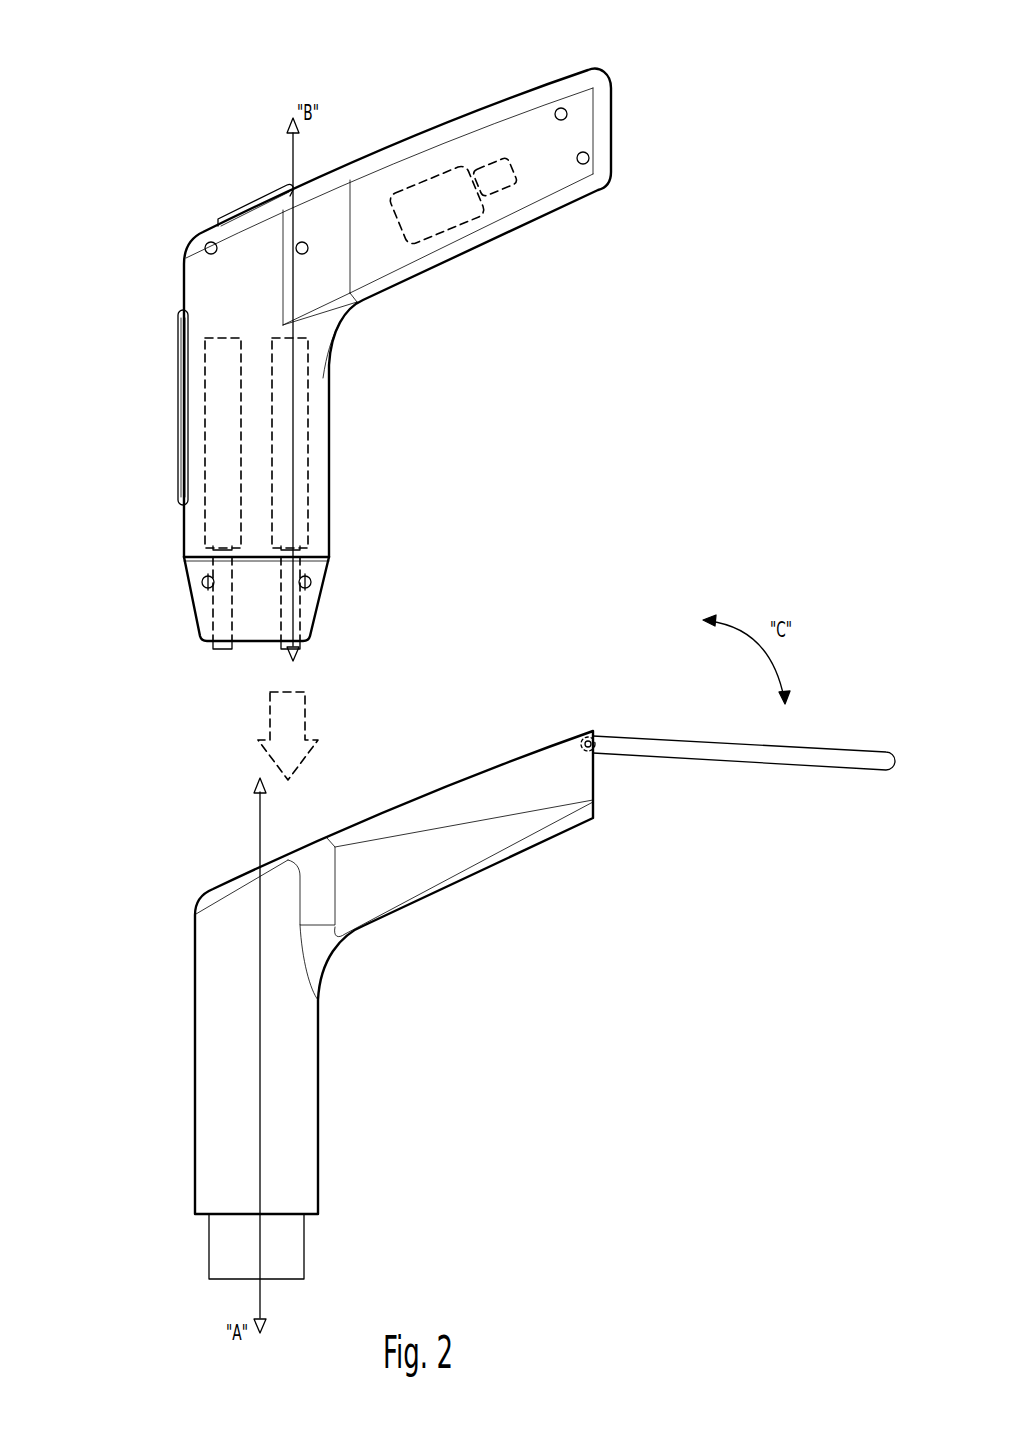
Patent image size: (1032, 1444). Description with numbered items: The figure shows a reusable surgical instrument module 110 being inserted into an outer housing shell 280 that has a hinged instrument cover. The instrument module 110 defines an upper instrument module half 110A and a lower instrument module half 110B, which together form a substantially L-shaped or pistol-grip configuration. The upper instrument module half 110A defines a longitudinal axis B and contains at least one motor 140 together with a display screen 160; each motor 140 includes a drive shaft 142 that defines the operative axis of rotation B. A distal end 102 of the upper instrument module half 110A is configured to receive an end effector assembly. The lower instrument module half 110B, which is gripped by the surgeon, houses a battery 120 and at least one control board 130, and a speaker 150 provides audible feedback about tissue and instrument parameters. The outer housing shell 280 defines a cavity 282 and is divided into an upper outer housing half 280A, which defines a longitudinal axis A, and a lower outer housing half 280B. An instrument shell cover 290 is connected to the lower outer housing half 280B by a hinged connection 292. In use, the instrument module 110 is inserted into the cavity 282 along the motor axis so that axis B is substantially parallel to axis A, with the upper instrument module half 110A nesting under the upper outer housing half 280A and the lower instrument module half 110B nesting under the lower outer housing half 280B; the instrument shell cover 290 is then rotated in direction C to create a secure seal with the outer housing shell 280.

The distal end 102 is at (195, 598).
The instrument module 110 is at (200, 190).
The upper instrument module half 110A is at (182, 538).
The lower instrument module half 110B is at (458, 120).
The battery 120 is at (500, 184).
The control board 130 is at (437, 217).
The motor 140 is at (305, 487).
The drive shaft 142 is at (303, 647).
The speaker 150 is at (273, 204).
The display screen 160 is at (176, 408).
The outer housing shell 280 is at (180, 838).
The upper outer housing half 280A is at (200, 998).
The lower outer housing half 280B is at (468, 786).
The cavity 282 is at (268, 853).
The instrument shell cover 290 is at (840, 765).
The hinged connection 292 is at (592, 746).